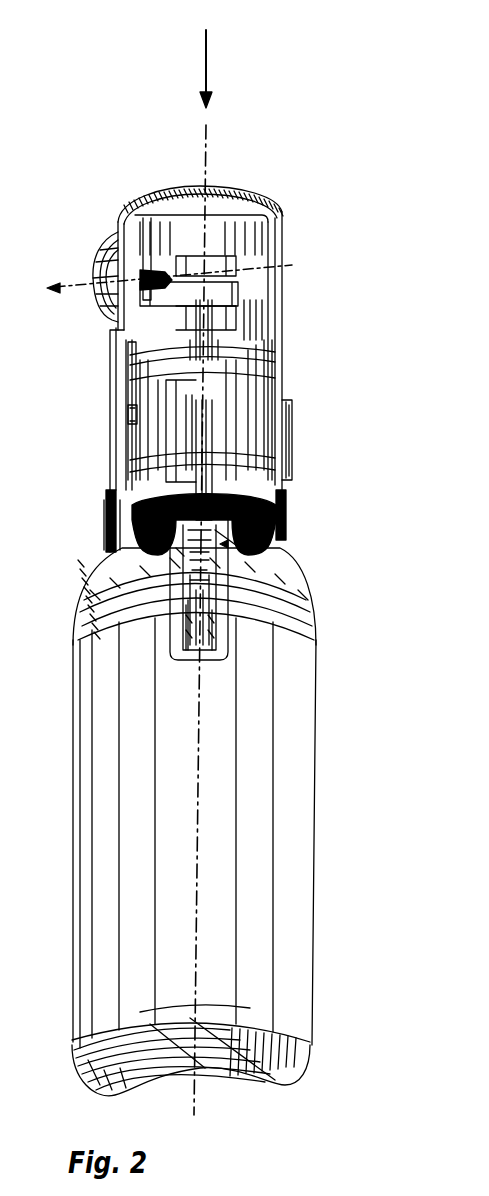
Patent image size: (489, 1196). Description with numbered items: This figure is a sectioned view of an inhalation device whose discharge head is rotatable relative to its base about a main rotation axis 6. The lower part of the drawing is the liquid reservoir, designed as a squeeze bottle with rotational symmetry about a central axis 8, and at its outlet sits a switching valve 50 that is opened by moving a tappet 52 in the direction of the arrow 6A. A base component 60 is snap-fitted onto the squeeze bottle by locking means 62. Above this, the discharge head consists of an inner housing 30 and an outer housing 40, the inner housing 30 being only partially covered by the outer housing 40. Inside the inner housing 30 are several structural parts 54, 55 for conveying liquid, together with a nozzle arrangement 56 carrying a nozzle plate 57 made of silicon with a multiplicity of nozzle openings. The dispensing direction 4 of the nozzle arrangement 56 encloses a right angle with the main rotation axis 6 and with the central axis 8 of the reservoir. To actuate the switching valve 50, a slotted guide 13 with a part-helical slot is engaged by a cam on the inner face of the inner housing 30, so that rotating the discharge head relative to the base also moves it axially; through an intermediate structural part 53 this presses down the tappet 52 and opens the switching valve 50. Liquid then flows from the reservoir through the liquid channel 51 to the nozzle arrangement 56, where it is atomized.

The dispensing direction 4 is at (80, 286).
The main rotation axis 6 is at (203, 124).
The central axis 8 is at (197, 827).
The arrow 6A is at (210, 78).
The slotted guide 13 is at (128, 416).
The inner housing 30 is at (118, 376).
The outer housing 40 is at (118, 228).
The switching valve 50 is at (262, 545).
The liquid channel 51 is at (198, 421).
The tappet 52 is at (224, 492).
The intermediate structural part 53 is at (210, 356).
The structural part for conveying liquid 54 is at (222, 294).
The structural part for conveying liquid 55 is at (220, 270).
The nozzle arrangement 56 is at (147, 225).
The nozzle plate 57 is at (165, 278).
The base component 60 is at (134, 396).
The locking means 62 is at (108, 542).